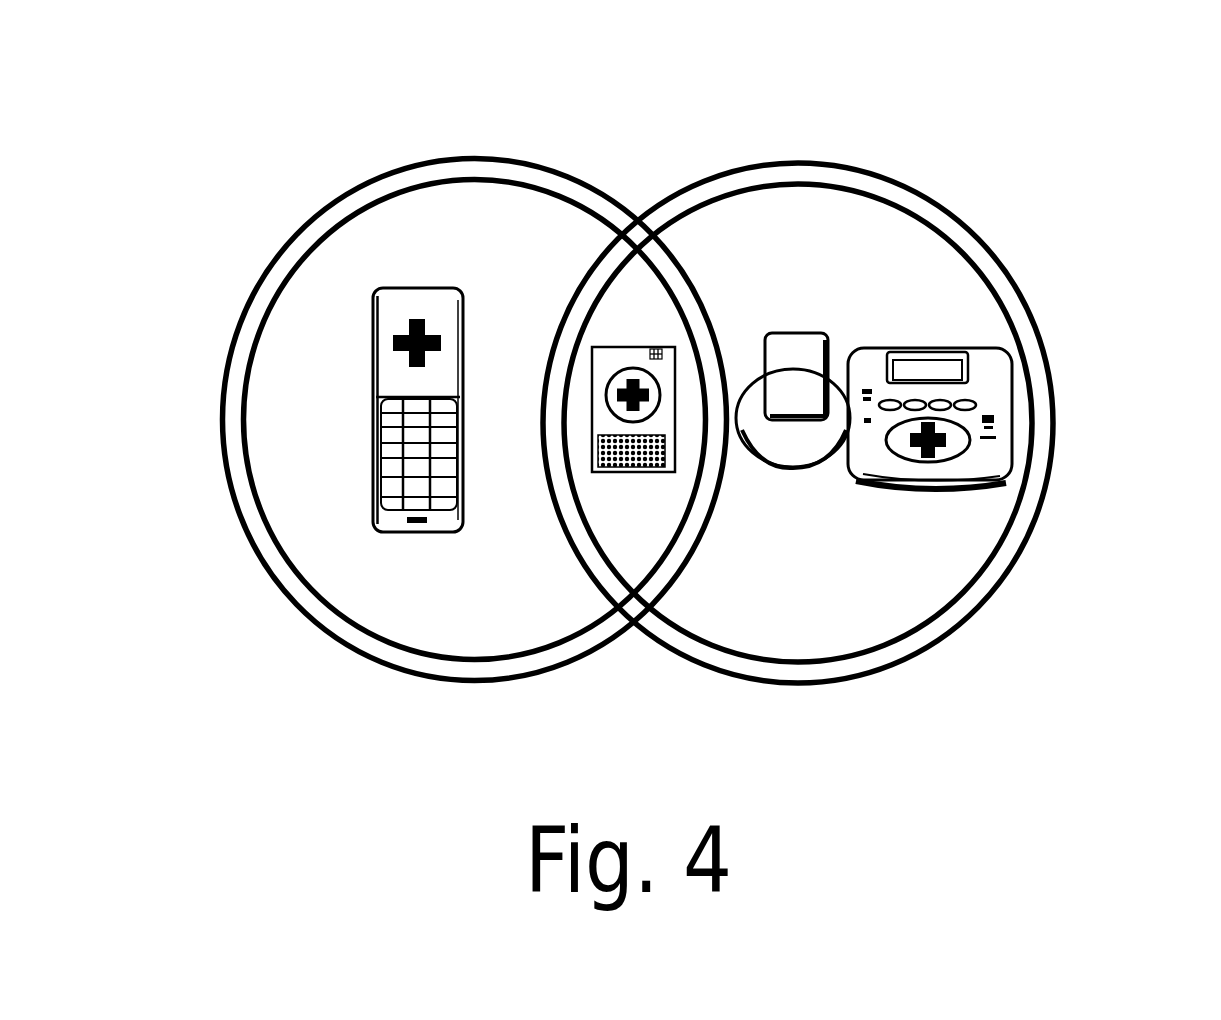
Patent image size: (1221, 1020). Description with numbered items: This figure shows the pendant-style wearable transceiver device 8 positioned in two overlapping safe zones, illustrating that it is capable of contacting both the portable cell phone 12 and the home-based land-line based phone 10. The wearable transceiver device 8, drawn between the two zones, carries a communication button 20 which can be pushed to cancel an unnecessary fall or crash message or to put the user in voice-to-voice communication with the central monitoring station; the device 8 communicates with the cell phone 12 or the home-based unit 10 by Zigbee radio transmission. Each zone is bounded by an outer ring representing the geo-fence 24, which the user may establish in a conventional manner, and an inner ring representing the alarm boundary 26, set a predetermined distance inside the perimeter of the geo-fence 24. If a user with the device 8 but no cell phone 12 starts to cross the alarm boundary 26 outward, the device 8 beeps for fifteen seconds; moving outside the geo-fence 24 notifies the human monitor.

The wearable transceiver device 8 is at (676, 266).
The communication button 20 is at (660, 397).
The portable cell phone 12 is at (370, 372).
The home-based stationary land-line based phone 10 is at (997, 382).
The geo-fence 24 is at (275, 582).
The alarm boundary 26 is at (243, 448).